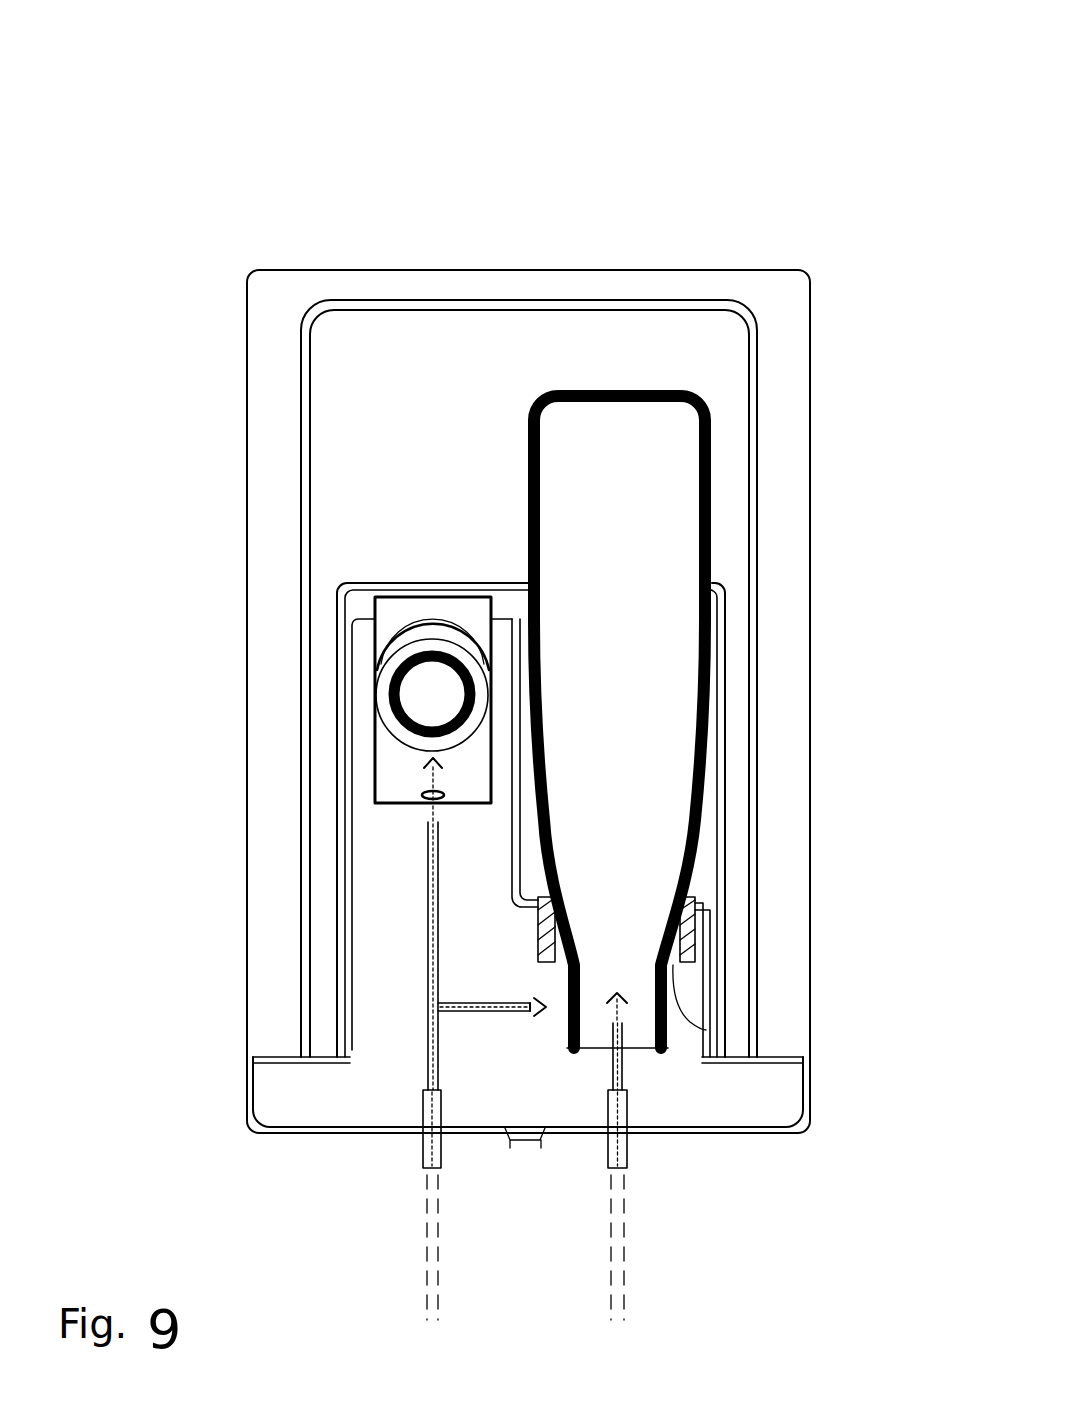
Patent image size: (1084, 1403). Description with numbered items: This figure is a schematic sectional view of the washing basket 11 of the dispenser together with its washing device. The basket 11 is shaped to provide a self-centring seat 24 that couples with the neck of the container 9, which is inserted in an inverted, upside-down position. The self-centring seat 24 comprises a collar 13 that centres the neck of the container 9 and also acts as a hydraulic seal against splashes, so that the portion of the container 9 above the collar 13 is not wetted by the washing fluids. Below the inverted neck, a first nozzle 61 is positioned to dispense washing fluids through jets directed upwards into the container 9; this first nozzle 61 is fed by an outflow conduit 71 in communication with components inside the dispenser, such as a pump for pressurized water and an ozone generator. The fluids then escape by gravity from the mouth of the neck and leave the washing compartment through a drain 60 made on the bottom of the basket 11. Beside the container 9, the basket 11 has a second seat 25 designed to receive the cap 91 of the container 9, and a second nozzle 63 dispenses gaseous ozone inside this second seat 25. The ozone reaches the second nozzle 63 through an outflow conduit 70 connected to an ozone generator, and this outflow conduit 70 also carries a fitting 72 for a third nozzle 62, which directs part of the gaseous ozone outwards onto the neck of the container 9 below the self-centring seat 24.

The first basket 11 is at (330, 228).
The container 9 is at (670, 576).
The cap 91 is at (433, 682).
The second seat 25 is at (398, 768).
The collar 13 is at (698, 897).
The self-centring seat 24 is at (706, 1030).
The first nozzle 61 is at (625, 1035).
The outflow conduit 71 is at (628, 1100).
The second nozzle 63 is at (440, 838).
The outflow conduit 70 is at (420, 1098).
The fitting 72 is at (440, 1005).
The third nozzle 62 is at (490, 1012).
The drain 60 is at (530, 1140).